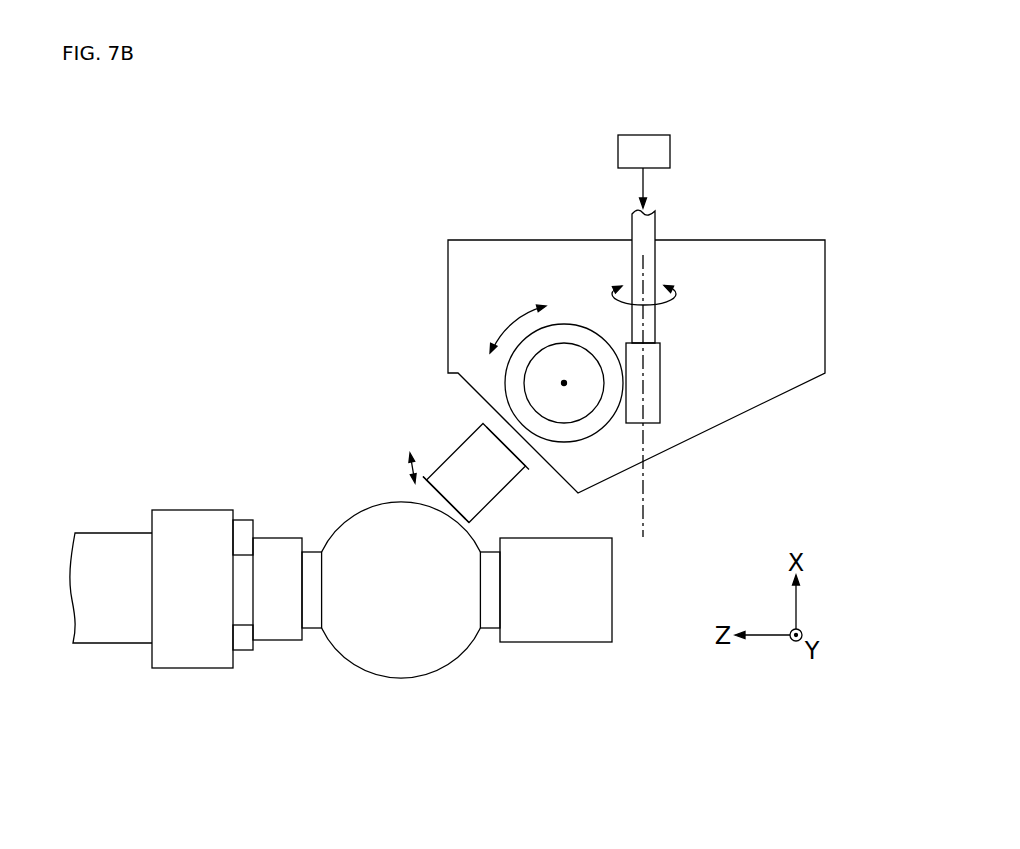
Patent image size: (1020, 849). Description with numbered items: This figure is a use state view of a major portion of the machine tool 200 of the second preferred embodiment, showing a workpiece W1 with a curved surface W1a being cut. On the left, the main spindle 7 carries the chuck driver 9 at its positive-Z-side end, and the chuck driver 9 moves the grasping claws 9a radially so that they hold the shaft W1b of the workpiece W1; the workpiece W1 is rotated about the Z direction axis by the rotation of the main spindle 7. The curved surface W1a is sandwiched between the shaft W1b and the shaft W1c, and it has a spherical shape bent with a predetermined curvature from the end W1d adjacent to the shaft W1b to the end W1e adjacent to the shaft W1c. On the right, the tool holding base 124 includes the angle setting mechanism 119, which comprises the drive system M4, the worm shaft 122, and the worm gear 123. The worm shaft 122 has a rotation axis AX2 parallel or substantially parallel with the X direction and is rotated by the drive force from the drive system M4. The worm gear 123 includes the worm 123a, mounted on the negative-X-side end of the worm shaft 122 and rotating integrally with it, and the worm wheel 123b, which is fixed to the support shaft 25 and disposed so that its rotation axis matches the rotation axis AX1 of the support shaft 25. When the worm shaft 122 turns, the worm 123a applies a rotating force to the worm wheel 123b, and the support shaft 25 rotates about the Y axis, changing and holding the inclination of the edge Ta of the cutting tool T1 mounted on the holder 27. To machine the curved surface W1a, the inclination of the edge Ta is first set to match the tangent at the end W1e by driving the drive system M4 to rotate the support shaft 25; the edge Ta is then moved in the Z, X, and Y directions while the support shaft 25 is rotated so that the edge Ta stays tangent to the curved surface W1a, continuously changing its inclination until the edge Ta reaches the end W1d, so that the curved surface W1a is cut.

The machine tool 200 is at (835, 131).
The tool holding base 124 is at (455, 269).
The drive system M4 is at (644, 171).
The worm shaft 122 is at (656, 218).
The rotation axis AX2 is at (647, 512).
The worm gear 123 is at (710, 417).
The worm 123a is at (655, 413).
The worm wheel 123b is at (607, 408).
The support shaft 25 is at (553, 355).
The rotation axis AX1 is at (564, 383).
The holder 27 is at (490, 424).
The cutting tool T1 is at (498, 478).
The edge Ta is at (426, 498).
The angle setting mechanism 119 is at (562, 458).
The main spindle 7 is at (115, 542).
The chuck driver 9 is at (197, 522).
The grasping claws 9a is at (243, 530).
The workpiece W1 is at (424, 577).
The curved surface W1a is at (393, 679).
The shaft W1b is at (273, 632).
The shaft W1c is at (553, 632).
The end W1d is at (318, 632).
The end W1e is at (483, 632).